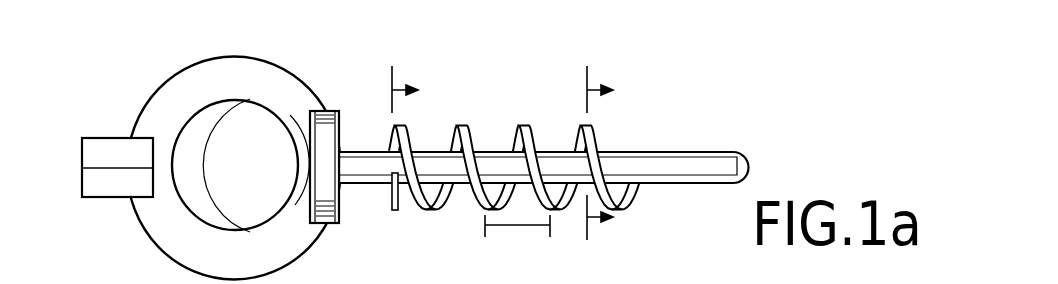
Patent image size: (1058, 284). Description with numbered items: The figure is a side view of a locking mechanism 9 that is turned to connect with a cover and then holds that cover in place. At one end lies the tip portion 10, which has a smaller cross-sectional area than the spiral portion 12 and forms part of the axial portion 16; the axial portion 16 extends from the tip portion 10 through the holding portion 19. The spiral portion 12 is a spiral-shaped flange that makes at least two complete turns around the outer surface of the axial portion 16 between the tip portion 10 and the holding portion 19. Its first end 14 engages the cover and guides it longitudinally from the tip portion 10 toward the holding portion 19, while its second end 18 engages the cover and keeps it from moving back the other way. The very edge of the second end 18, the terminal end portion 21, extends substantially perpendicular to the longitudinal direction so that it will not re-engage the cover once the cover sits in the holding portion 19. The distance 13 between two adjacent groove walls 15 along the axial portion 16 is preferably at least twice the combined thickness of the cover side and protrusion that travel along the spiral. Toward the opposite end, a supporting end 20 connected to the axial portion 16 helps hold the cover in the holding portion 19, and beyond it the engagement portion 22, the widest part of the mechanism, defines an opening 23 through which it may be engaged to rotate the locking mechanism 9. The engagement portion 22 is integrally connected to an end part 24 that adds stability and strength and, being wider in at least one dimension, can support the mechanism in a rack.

The locking mechanism 9 is at (855, 122).
The tip portion 10 is at (742, 152).
The spiral portion 12 is at (520, 127).
The distance 13 is at (517, 237).
The first end 14 is at (618, 190).
The groove walls 15 is at (483, 195).
The axial portion 16 is at (490, 147).
The second end 18 is at (397, 123).
The holding portion 19 is at (367, 187).
The supporting end 20 is at (339, 128).
The terminal end portion 21 is at (382, 140).
The engagement portion 22 is at (178, 68).
The opening 23 is at (200, 142).
The end part 24 is at (113, 155).